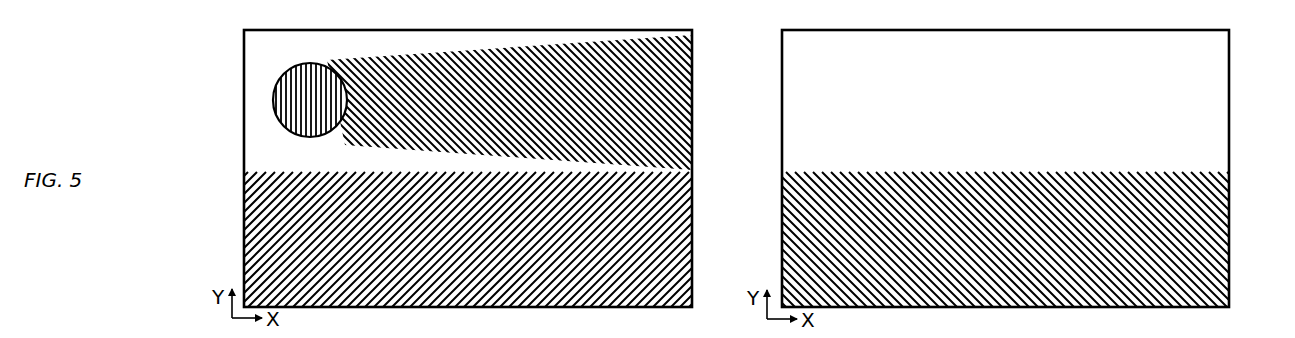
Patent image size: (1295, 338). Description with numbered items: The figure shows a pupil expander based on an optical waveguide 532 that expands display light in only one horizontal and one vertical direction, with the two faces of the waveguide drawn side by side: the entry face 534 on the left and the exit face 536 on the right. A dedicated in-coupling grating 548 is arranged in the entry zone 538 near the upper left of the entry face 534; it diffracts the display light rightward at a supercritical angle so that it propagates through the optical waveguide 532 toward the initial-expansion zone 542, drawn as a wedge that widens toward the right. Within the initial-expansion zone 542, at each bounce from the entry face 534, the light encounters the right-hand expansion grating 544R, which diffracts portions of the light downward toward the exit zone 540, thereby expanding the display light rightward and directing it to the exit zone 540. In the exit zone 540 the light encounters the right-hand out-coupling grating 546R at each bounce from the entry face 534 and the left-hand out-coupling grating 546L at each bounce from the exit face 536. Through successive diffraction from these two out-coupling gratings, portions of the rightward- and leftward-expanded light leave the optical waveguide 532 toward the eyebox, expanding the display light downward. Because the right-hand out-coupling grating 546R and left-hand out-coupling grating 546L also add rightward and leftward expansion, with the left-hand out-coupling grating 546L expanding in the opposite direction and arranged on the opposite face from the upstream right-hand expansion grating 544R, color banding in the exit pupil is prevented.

The optical waveguide 532 is at (232, 128).
The entry face 534 is at (292, 56).
The exit face 536 is at (1220, 58).
The entry zone 538 is at (303, 57).
The exit zone 540 is at (697, 172).
The initial-expansion zone 542 is at (697, 35).
The right-hand expansion grating 544R is at (447, 138).
The right-hand out-coupling grating 546R is at (280, 224).
The left-hand out-coupling grating 546L is at (958, 186).
The in-coupling grating 548 is at (277, 117).